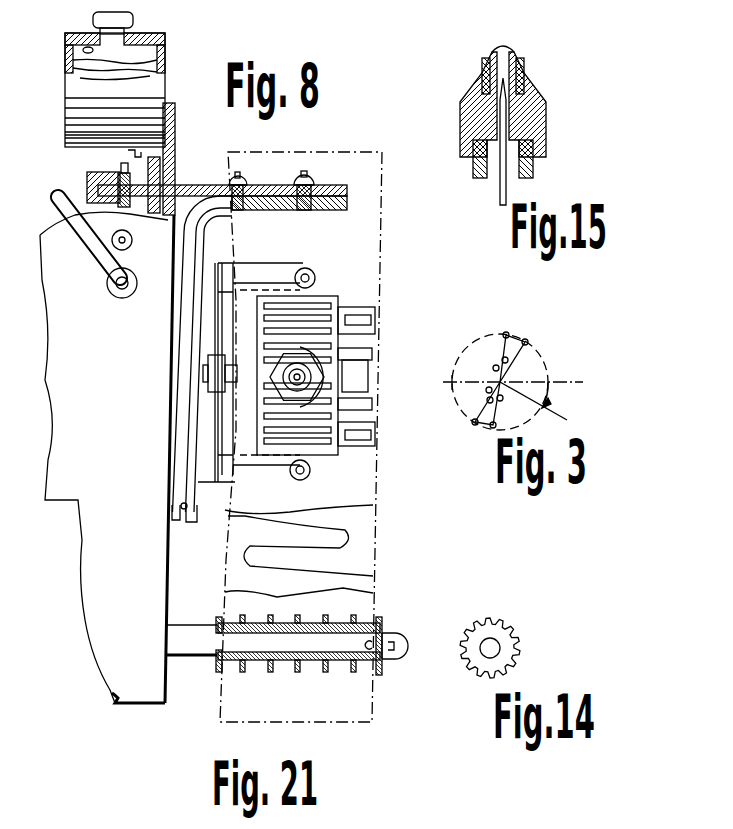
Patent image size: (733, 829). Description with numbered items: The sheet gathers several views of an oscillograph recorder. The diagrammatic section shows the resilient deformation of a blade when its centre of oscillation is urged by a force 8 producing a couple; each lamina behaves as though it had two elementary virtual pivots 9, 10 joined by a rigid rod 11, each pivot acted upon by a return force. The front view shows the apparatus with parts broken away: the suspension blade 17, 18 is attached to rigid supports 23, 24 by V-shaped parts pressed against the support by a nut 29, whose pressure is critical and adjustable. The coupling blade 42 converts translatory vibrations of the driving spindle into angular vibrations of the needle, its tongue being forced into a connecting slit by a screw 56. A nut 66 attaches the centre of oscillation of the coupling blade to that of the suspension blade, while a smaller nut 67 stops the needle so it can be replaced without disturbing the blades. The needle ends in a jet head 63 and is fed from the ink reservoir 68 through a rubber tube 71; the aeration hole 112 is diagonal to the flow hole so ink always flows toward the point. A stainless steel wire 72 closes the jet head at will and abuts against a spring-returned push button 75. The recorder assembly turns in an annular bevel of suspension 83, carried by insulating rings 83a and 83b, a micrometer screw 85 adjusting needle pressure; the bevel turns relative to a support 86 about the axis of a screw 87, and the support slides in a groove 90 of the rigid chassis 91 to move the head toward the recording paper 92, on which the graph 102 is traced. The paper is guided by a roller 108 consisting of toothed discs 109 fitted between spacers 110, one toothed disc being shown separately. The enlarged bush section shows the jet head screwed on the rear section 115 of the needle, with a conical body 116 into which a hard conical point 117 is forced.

In FIG. 3, the force 8 is at (562, 402).
In FIG. 3, the elementary virtual pivot 9 is at (527, 344).
In FIG. 3, the elementary virtual pivot 10 is at (512, 375).
In FIG. 3, the rigid rod 11 is at (522, 352).
In FIG. 8, the suspension blade 17 is at (368, 411).
In FIG. 8, the suspension blade 18 is at (369, 345).
In FIG. 8, the rigid support 23 is at (265, 270).
In FIG. 8, the rigid support 24 is at (285, 477).
In FIG. 8, the nut 29 is at (318, 272).
In FIG. 8, the coupling blade 42 is at (270, 372).
In FIG. 8, the screw 56 is at (210, 382).
In FIG. 8, the jet head 63 is at (292, 394).
In FIG. 8, the nut 66 is at (325, 366).
In FIG. 8, the nut 67 is at (323, 388).
In FIG. 8, the ink reservoir 68 is at (115, 79).
In FIG. 8, the rubber tube 71 is at (128, 152).
In FIG. 15, the stainless steel wire 72 is at (500, 198).
In FIG. 8, the push button 75 is at (130, 243).
In FIG. 8, the annular bevel of suspension 83 is at (200, 216).
In FIG. 8, the ring 83a is at (172, 513).
In FIG. 8, the ring 83b is at (186, 516).
In FIG. 8, the micrometer screw 85 is at (188, 503).
In FIG. 8, the support 86 is at (345, 186).
In FIG. 8, the screw 87 is at (298, 197).
In FIG. 8, the groove 90 is at (195, 185).
In FIG. 8, the rigid chassis 91 is at (172, 105).
In FIG. 21, the recording paper 92 is at (374, 538).
In FIG. 21, the graph 102 is at (318, 548).
In FIG. 21, the roller 108 is at (384, 636).
In FIG. 21, the toothed disc 109 is at (351, 668).
In FIG. 14, the toothed disc 109 is at (480, 664).
In FIG. 21, the spacer 110 is at (280, 666).
In FIG. 8, the aeration hole 112 is at (87, 46).
In FIG. 15, the rear section of the needle 115 is at (530, 168).
In FIG. 15, the conical body 116 is at (462, 113).
In FIG. 15, the conical point 117 is at (516, 72).